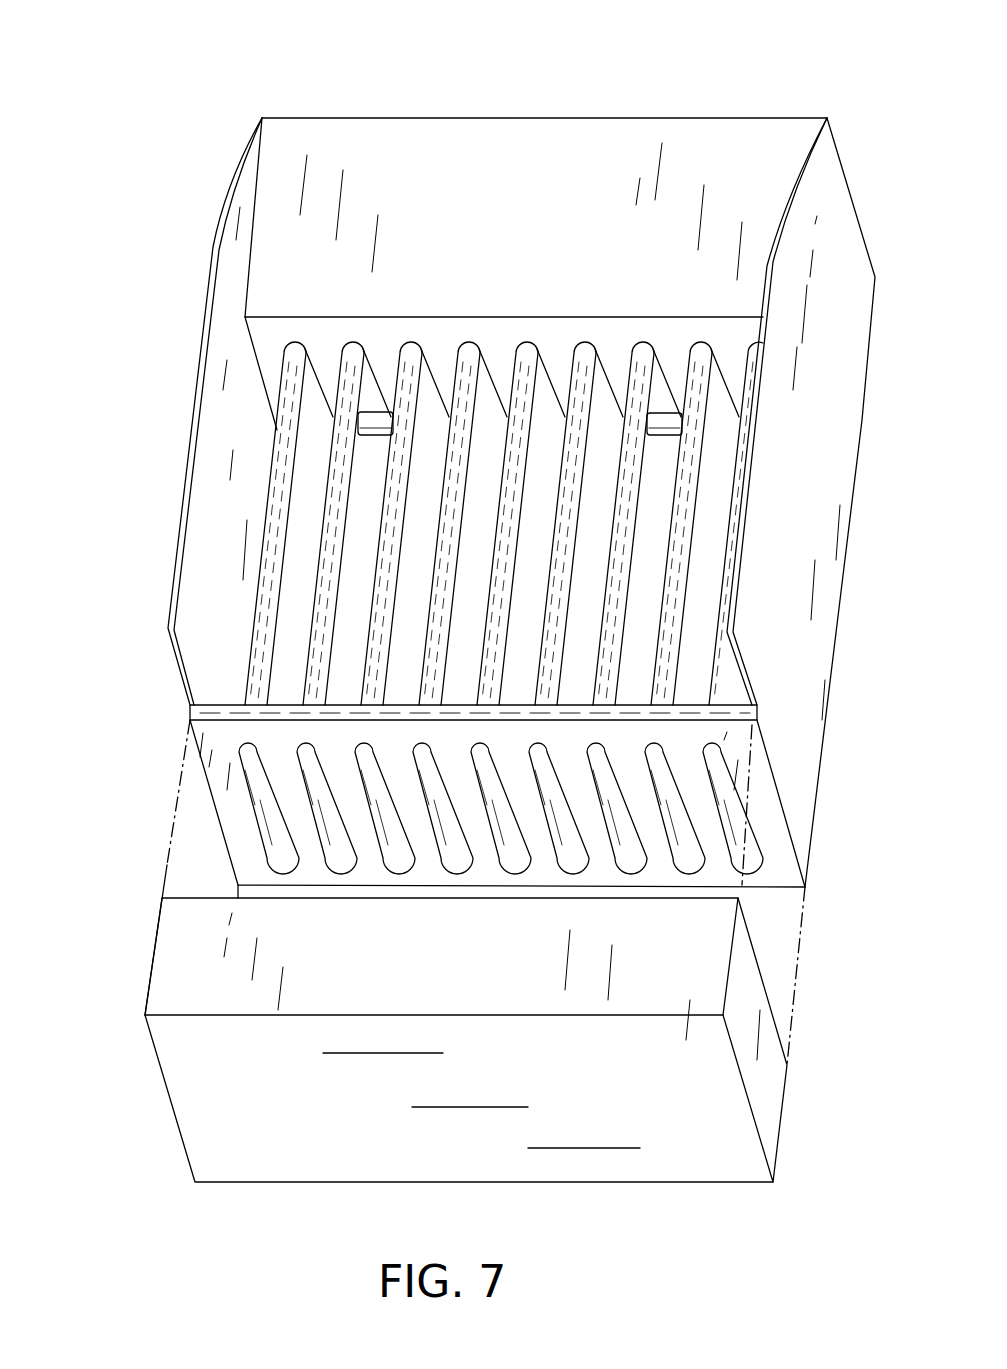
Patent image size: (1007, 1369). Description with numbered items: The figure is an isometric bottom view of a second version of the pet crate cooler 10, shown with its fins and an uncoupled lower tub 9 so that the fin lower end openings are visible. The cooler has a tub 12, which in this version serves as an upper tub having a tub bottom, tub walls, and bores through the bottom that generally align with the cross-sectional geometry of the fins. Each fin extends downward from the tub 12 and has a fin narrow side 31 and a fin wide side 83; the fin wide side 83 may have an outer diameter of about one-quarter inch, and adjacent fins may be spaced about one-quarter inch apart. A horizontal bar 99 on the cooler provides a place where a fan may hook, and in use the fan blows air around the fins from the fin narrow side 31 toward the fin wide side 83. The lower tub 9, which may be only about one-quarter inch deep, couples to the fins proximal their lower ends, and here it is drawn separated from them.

The pet crate cooler 10 is at (183, 198).
The tub 12 is at (592, 147).
The fin narrow side 31 is at (287, 365).
The horizontal bar 99 is at (667, 412).
The fin wide side 83 is at (273, 855).
The lower tub 9 is at (692, 972).